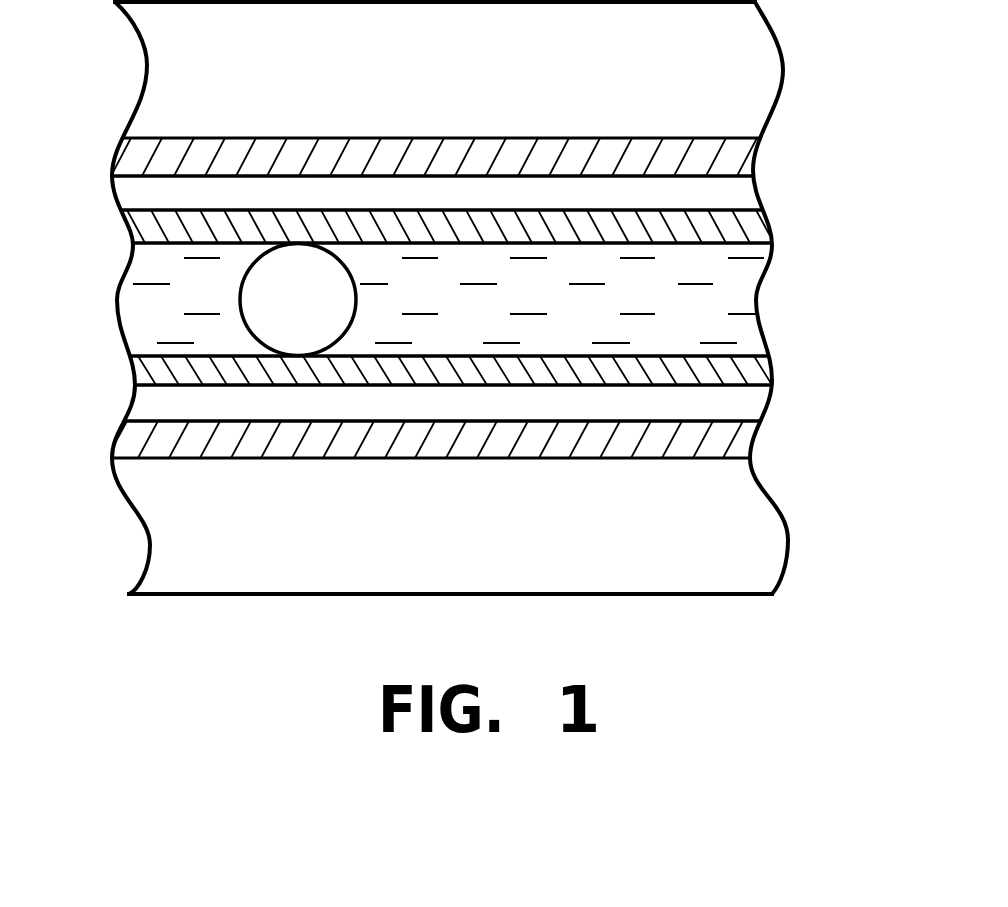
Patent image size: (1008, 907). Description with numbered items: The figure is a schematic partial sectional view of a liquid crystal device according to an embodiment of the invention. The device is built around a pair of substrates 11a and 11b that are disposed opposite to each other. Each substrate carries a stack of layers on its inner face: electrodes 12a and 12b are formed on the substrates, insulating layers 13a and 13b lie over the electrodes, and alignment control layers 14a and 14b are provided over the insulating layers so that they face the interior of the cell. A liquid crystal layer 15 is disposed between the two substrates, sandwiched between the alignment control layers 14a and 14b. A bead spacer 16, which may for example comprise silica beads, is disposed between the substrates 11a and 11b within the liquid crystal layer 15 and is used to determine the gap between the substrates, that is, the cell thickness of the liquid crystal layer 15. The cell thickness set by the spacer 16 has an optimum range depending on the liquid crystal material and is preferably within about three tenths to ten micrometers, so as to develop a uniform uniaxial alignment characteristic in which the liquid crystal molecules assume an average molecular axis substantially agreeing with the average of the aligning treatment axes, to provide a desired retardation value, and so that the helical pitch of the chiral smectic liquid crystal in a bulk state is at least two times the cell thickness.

The substrate 11a is at (767, 55).
The substrate 11b is at (767, 532).
The electrode 12a is at (735, 160).
The electrode 12b is at (733, 453).
The insulating layer 13a is at (747, 193).
The insulating layer 13b is at (747, 403).
The alignment control layer 14a is at (752, 227).
The alignment control layer 14b is at (760, 367).
The liquid crystal layer 15 is at (748, 285).
The spacer 16 is at (255, 297).